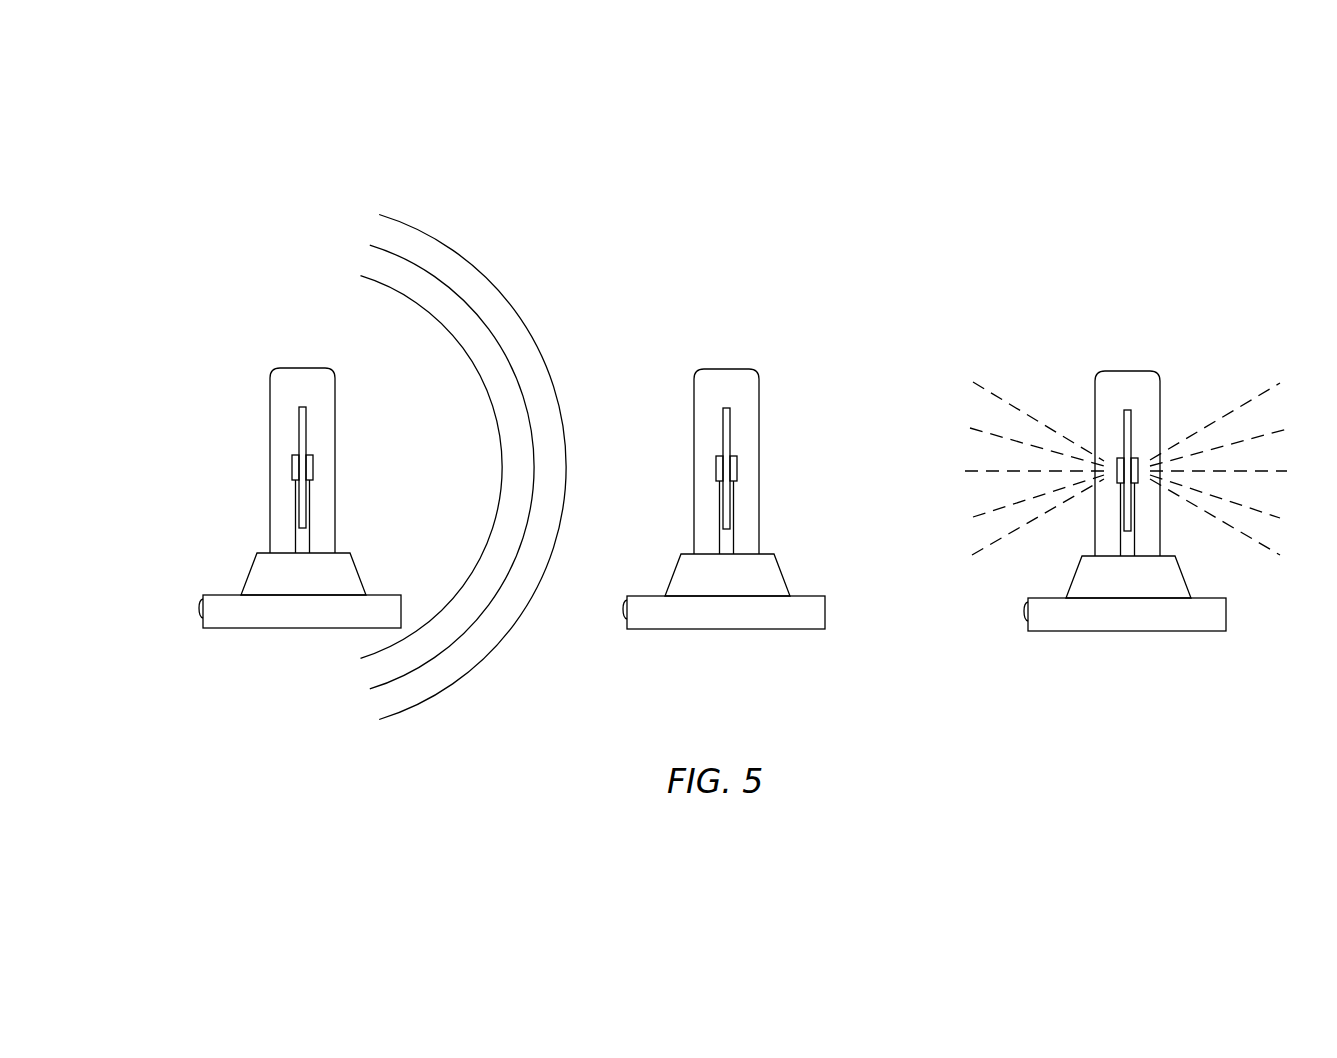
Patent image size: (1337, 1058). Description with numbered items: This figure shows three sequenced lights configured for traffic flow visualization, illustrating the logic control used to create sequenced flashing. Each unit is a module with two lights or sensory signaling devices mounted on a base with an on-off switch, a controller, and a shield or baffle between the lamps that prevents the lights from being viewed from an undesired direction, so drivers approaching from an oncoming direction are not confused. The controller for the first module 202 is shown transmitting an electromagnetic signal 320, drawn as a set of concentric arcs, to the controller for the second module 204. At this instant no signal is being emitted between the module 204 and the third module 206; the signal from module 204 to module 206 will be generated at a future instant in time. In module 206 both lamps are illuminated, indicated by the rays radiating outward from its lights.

The module 202 is at (332, 285).
The module 204 is at (750, 286).
The module 206 is at (1140, 283).
The electromagnetic signal 320 is at (488, 328).